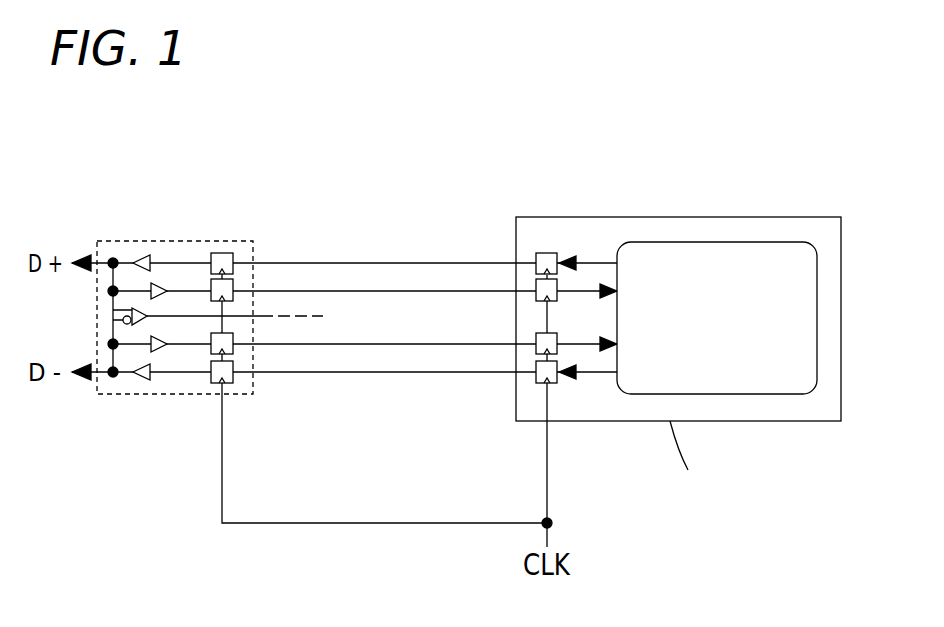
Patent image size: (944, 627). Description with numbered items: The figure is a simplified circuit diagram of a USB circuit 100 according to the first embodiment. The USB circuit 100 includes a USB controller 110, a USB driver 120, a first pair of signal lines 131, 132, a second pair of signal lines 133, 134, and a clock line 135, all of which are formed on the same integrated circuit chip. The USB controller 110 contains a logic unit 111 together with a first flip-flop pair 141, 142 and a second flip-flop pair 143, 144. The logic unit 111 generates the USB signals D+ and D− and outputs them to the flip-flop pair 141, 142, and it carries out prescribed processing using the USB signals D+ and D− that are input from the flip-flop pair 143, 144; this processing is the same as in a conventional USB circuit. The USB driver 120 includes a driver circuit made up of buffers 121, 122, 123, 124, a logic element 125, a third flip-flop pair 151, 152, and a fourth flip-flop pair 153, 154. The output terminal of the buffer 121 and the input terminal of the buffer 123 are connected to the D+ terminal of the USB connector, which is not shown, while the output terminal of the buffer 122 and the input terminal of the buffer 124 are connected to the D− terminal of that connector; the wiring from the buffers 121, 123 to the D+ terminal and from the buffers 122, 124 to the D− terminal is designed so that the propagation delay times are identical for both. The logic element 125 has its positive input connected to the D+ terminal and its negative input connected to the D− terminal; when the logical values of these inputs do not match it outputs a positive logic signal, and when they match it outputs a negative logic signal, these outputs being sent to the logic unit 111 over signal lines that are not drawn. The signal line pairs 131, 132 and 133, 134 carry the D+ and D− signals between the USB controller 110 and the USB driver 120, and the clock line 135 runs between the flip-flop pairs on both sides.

The USB circuit 100 is at (803, 129).
The USB controller 110 is at (667, 217).
The logic unit 111 is at (817, 310).
The USB driver 120 is at (123, 241).
The buffer 121 is at (146, 255).
The buffer 122 is at (146, 380).
The buffer 123 is at (161, 283).
The buffer 124 is at (159, 351).
The logic element 125 is at (140, 325).
The signal line 131 is at (387, 263).
The signal line 132 is at (367, 372).
The signal line 133 is at (437, 292).
The signal line 134 is at (423, 344).
The clock line 135 is at (362, 523).
The flip-flop 141 is at (553, 253).
The flip-flop 142 is at (555, 383).
The flip-flop 143 is at (537, 280).
The flip-flop 144 is at (538, 355).
The flip-flop 151 is at (228, 253).
The flip-flop 152 is at (211, 384).
The flip-flop 153 is at (233, 285).
The flip-flop 154 is at (233, 345).